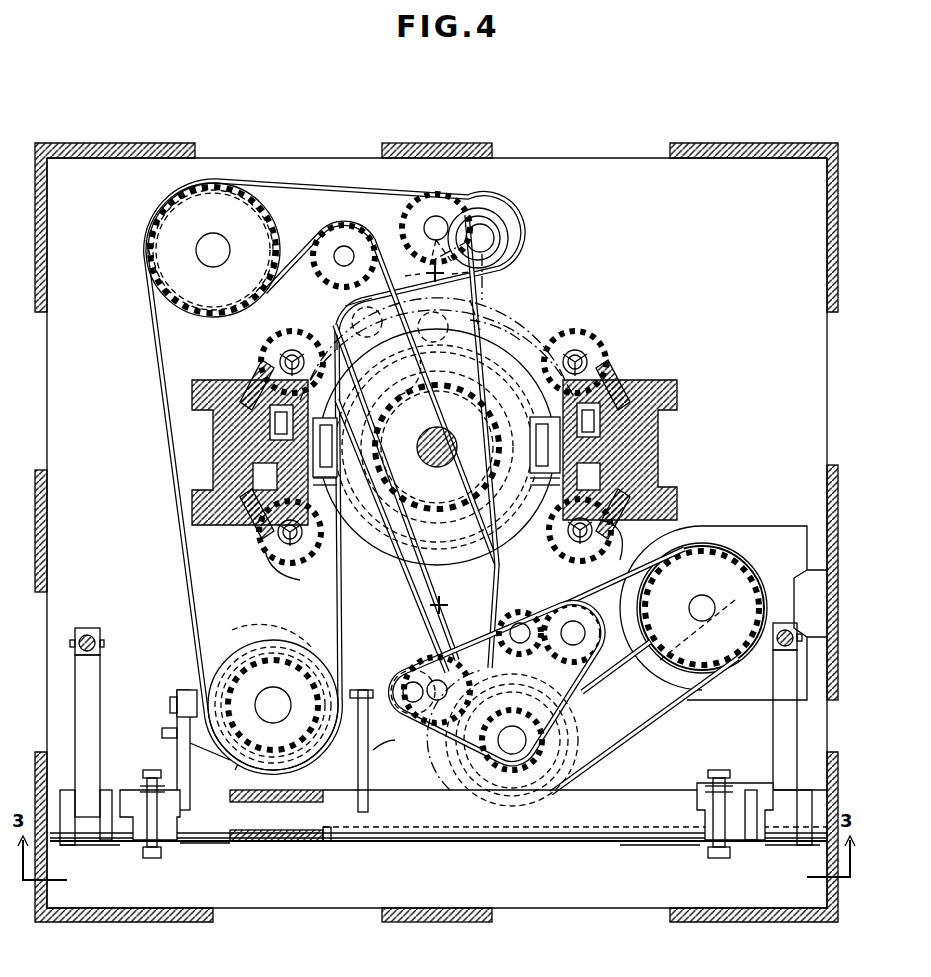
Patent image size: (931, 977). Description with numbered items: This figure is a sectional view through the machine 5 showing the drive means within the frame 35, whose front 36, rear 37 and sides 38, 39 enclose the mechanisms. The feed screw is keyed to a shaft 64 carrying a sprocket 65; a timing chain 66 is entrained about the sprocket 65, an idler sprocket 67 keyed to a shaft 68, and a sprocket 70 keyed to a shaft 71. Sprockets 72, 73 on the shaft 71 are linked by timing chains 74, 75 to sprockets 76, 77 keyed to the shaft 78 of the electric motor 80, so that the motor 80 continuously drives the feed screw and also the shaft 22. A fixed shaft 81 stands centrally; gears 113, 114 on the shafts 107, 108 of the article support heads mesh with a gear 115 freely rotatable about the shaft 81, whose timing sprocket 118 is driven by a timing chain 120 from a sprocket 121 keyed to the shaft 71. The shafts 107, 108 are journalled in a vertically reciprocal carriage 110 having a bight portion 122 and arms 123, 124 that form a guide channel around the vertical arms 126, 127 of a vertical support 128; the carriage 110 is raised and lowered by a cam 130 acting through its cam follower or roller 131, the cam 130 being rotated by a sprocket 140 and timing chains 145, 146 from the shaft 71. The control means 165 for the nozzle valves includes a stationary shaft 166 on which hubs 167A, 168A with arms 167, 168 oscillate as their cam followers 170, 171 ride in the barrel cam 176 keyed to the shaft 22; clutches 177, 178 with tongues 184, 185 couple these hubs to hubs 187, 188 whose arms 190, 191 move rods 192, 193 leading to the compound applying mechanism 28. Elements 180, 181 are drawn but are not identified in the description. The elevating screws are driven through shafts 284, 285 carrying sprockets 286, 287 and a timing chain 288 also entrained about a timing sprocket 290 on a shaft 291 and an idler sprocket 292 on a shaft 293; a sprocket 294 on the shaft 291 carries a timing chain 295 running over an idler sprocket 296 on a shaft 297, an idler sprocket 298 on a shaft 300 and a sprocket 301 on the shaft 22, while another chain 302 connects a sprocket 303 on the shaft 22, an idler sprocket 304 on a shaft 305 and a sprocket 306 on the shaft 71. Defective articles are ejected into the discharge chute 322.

The machine 5 is at (656, 78).
The shaft 22 is at (276, 698).
The compound applying mechanism 28 is at (213, 250).
The frame 35 is at (748, 143).
The front 36 is at (478, 922).
The rear 37 is at (468, 143).
The side 38 is at (48, 528).
The side 39 is at (827, 480).
The shaft 64 is at (403, 712).
The sprocket 65 is at (460, 678).
The timing chain 66 is at (458, 636).
The idler sprocket 67 is at (597, 654).
The shaft 68 is at (572, 630).
The sprocket 70 is at (470, 786).
The shaft 71 is at (576, 758).
The sprocket 72 is at (580, 714).
The sprocket 73 is at (512, 740).
The timing chain 74 is at (688, 698).
The timing chain 75 is at (697, 630).
The sprocket 76 is at (735, 570).
The sprocket 77 is at (702, 608).
The shaft 78 is at (705, 604).
The electric motor 80 is at (772, 578).
The fixed shaft 81 is at (440, 438).
The shaft 107 is at (278, 556).
The shaft 108 is at (286, 350).
The carriage 110 is at (630, 370).
The gear 113 is at (302, 588).
The gear 114 is at (340, 374).
The gear 115 is at (545, 342).
The timing sprocket 118 is at (460, 534).
The timing chain 120 is at (448, 576).
The sprocket 121 is at (550, 800).
The bight portion 122 is at (345, 457).
The arm 123 is at (670, 425).
The arm 124 is at (670, 466).
The vertical arm 126 is at (228, 436).
The vertical arm 127 is at (228, 462).
The vertical support 128 is at (192, 450).
The cam 130 is at (437, 447).
The cam follower 131 is at (345, 432).
The sprocket 140 is at (460, 378).
The timing chain 145 is at (400, 518).
The timing chain 146 is at (437, 447).
The control mechanism 165 is at (396, 848).
The stationary shaft 166 is at (325, 828).
The arm 167 is at (180, 730).
The hub 167A is at (248, 845).
The arm 168 is at (384, 732).
The hub 168A is at (466, 840).
The cam follower 170 is at (192, 690).
The cam follower 171 is at (273, 705).
The barrel cam 176 is at (256, 636).
The clutch 177 is at (174, 858).
The clutch 178 is at (688, 848).
The bolt 180 is at (148, 866).
The bolt 181 is at (722, 866).
The tongue 184 is at (188, 845).
The tongue 185 is at (118, 798).
The hub 187 is at (92, 855).
The hub 188 is at (790, 845).
The arm 190 is at (98, 680).
The arm 191 is at (780, 748).
The rod 192 is at (88, 630).
The rod 193 is at (795, 630).
The rotatable shaft 284 is at (440, 222).
The rotatable shaft 285 is at (458, 334).
The sprocket 286 is at (492, 212).
The sprocket 287 is at (500, 312).
The timing chain 288 is at (318, 183).
The timing sprocket 290 is at (165, 212).
The shaft 291 is at (217, 243).
The idler sprocket 292 is at (270, 272).
The shaft 293 is at (346, 245).
The sprocket 294 is at (155, 245).
The timing chain 295 is at (322, 230).
The idler sprocket 296 is at (510, 252).
The shaft 297 is at (503, 232).
The idler sprocket 298 is at (333, 296).
The shaft 300 is at (331, 312).
The sprocket 301 is at (245, 762).
The chain 302 is at (385, 792).
The sprocket 303 is at (205, 745).
The idler sprocket 304 is at (406, 668).
The shaft 305 is at (402, 688).
The sprocket 306 is at (605, 755).
The discharge chute 322 is at (323, 843).